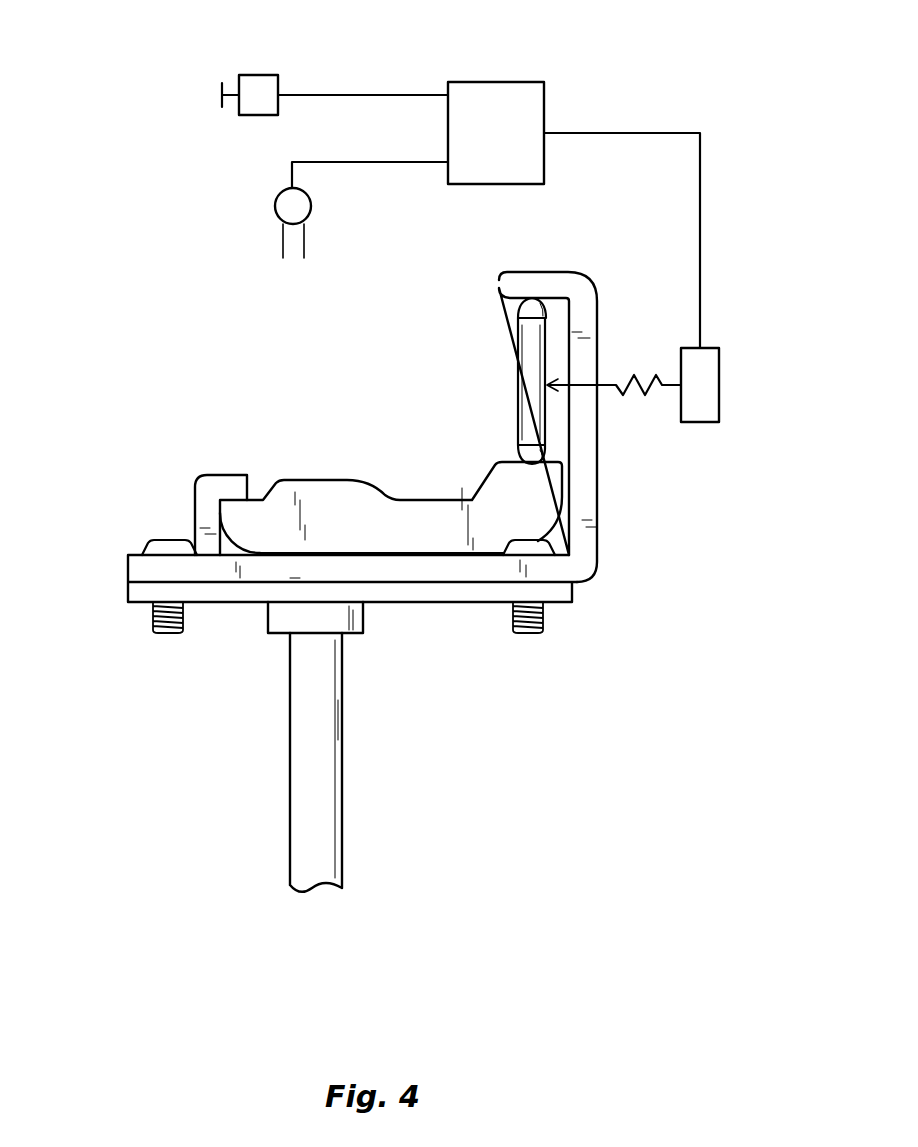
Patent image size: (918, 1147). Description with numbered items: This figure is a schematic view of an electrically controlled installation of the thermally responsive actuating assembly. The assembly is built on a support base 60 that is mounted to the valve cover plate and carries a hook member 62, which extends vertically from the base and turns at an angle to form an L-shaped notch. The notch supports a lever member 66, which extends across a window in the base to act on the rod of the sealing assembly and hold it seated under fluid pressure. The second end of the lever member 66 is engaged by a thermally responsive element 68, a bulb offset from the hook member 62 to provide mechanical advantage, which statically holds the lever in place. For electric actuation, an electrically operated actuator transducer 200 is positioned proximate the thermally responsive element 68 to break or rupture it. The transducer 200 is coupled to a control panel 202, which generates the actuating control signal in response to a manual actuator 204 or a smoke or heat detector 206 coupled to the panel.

The support base 60 is at (128, 572).
The hook member 62 is at (207, 477).
The lever member 66 is at (433, 500).
The thermally responsive element 68 is at (518, 366).
The electrically operated actuator transducer 200 is at (719, 390).
The control panel 202 is at (490, 82).
The manual actuator 204 is at (250, 75).
The smoke or heat detector 206 is at (275, 207).